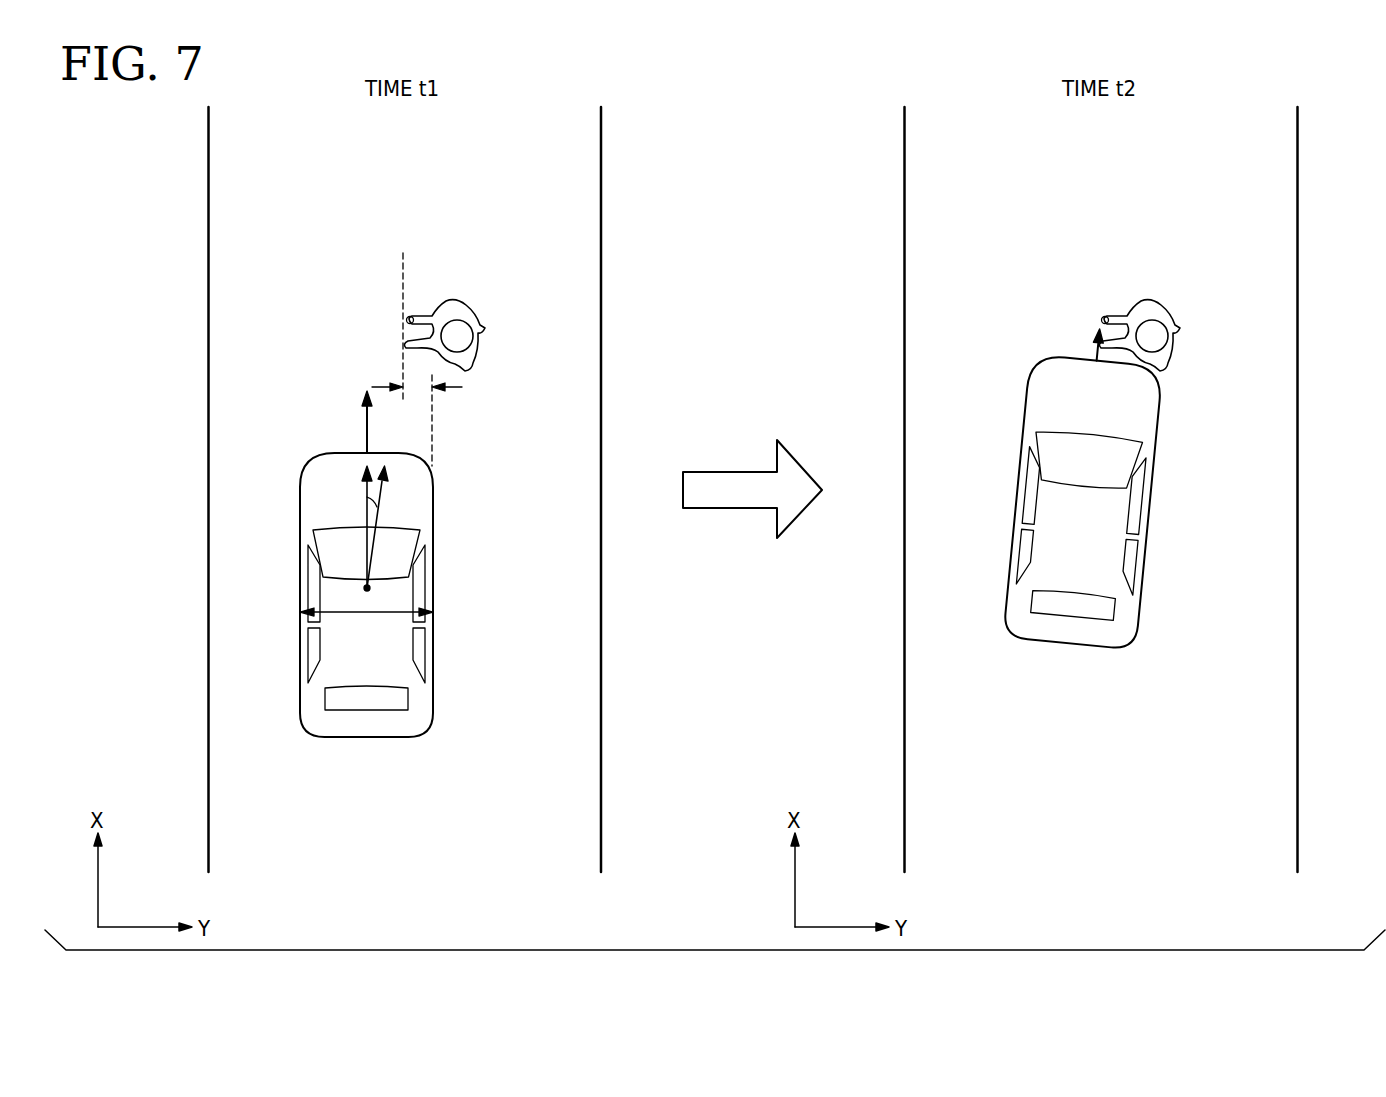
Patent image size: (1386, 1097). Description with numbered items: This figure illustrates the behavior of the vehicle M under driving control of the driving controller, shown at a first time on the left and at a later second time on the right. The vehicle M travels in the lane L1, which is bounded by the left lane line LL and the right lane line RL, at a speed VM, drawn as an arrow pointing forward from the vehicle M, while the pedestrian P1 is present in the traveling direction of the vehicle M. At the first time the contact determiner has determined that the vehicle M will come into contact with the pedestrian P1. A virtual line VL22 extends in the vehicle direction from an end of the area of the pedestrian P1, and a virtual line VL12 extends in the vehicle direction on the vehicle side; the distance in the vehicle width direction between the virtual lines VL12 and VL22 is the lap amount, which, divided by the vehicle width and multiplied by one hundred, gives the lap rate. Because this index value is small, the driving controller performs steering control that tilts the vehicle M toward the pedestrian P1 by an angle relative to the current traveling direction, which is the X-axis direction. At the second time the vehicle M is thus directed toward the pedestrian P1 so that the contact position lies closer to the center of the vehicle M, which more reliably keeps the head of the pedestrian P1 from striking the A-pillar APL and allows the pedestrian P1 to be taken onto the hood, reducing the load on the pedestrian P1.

The vehicle M is at (434, 596).
The pedestrian P1 is at (447, 300).
The A-pillar APL is at (434, 540).
The speed of the vehicle VM is at (366, 422).
The virtual line VL22 is at (402, 298).
The virtual line VL12 is at (433, 438).
The left lane line LL is at (208, 752).
The right lane line RL is at (601, 753).
The lane L1 is at (420, 871).